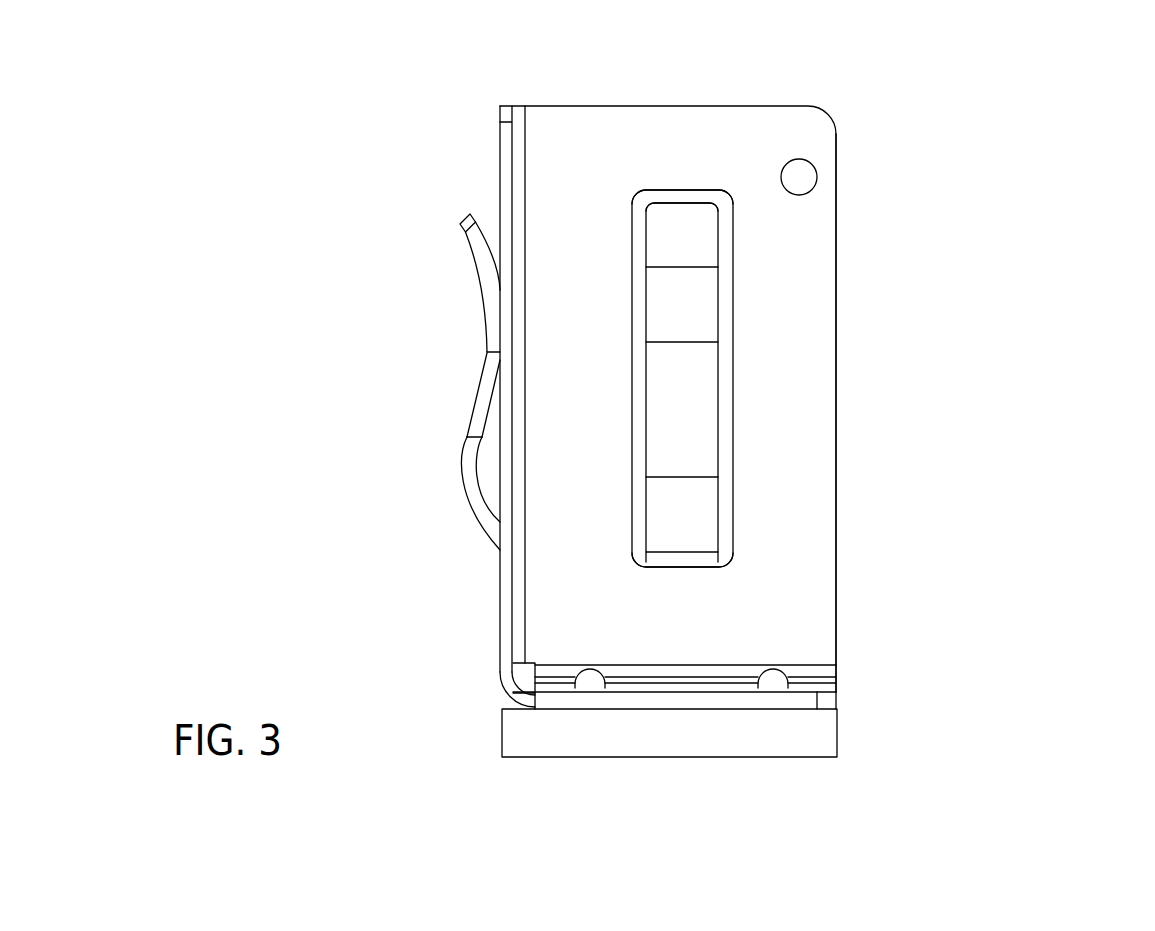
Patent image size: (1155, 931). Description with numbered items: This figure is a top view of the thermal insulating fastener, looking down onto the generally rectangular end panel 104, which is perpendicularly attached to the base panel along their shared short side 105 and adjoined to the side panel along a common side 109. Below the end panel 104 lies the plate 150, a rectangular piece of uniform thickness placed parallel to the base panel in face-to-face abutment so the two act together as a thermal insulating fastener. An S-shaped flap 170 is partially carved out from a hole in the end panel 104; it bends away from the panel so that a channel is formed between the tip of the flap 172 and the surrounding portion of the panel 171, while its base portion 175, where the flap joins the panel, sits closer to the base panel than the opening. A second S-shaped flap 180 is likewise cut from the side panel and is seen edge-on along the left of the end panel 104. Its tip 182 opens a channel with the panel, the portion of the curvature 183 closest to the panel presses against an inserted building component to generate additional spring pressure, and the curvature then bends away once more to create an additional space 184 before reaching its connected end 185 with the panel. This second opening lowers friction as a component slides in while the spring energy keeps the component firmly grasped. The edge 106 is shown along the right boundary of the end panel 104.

The end panel 104 is at (795, 486).
The short side 105 is at (672, 697).
The side edge of plate 106 is at (836, 441).
The common side 109 is at (512, 437).
The plate 150 is at (735, 727).
The S-shaped flap 170 is at (698, 395).
The portion of the panel 171 is at (675, 190).
The tip of the flap 172 is at (677, 205).
The base portion of the flap 175 is at (688, 567).
The S-shaped flap 180 is at (329, 361).
The tip of the flap 182 is at (466, 217).
The portion of the curvature 183 is at (487, 350).
The additional space 184 is at (463, 495).
The connected end of the flap 185 is at (498, 549).